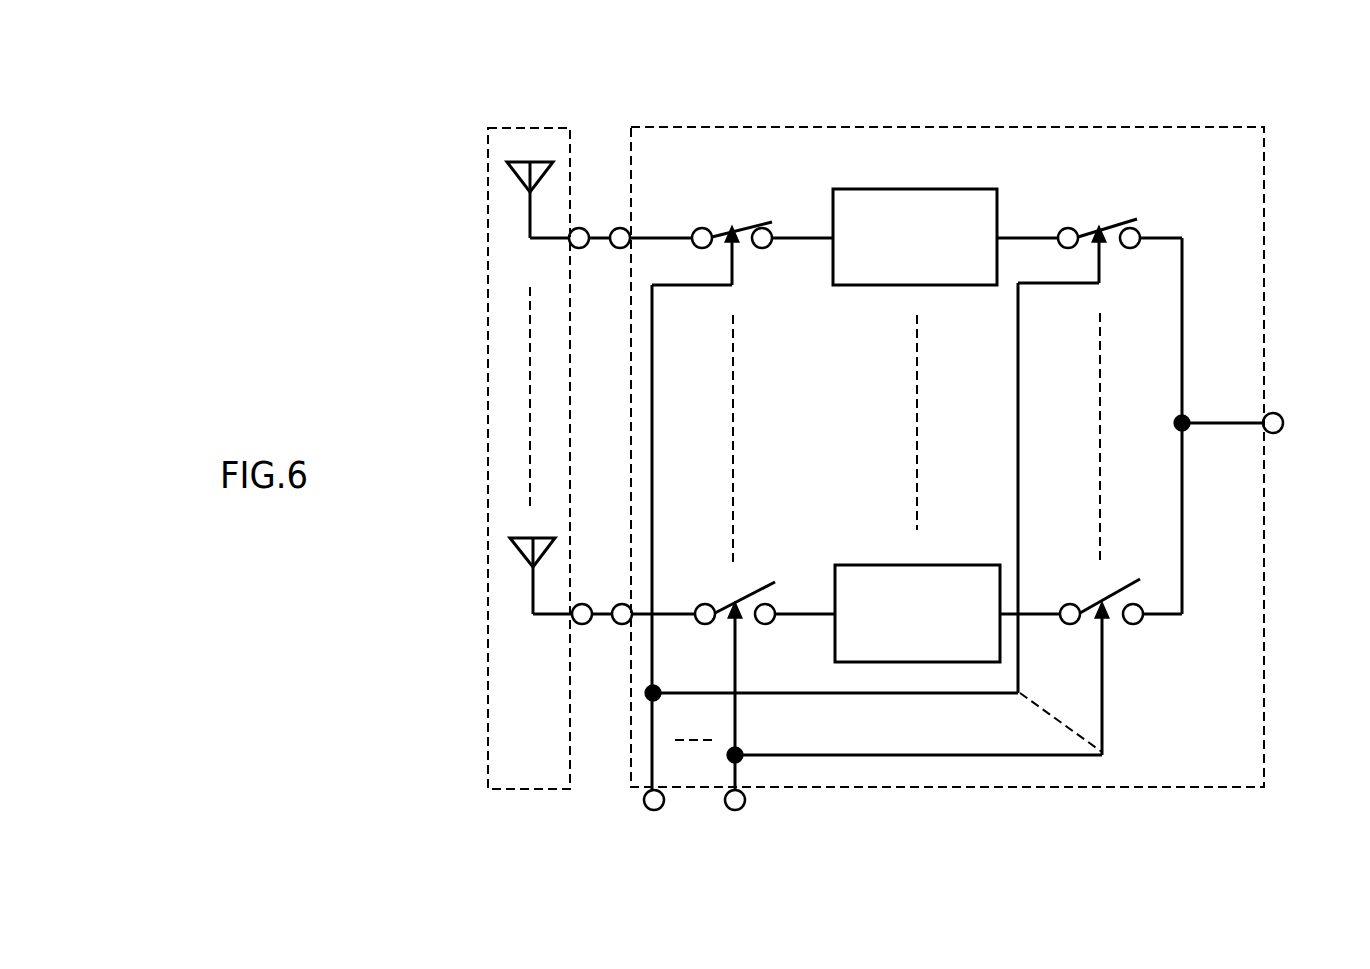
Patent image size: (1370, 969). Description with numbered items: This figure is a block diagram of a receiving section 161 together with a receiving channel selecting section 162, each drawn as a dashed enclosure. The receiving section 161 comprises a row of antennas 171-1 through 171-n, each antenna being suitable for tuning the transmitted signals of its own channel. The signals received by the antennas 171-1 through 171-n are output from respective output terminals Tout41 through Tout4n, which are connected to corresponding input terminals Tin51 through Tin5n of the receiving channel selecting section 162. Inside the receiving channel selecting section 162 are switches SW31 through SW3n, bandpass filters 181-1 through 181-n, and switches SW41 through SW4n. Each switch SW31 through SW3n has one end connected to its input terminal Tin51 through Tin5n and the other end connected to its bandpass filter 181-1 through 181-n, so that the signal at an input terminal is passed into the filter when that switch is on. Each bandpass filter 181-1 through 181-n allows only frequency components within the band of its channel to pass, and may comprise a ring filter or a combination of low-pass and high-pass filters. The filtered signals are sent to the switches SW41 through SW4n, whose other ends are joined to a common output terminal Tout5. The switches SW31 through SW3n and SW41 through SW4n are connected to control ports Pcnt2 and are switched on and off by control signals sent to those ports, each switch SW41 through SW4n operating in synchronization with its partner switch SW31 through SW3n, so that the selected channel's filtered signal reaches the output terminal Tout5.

The receiving section 161 is at (572, 128).
The receiving channel selecting section 162 is at (830, 127).
The antenna 171-1 is at (527, 158).
The antenna 171-n is at (518, 556).
The bandpass filter 181-1 is at (897, 189).
The bandpass filter 181-n is at (897, 565).
The output terminal Tout41 is at (577, 230).
The output terminal Tout4n is at (583, 625).
The input terminal Tin51 is at (618, 228).
The input terminal Tin5n is at (621, 625).
The switch SW31 is at (730, 226).
The switch SW3n is at (733, 603).
The switch SW41 is at (1097, 226).
The switch SW4n is at (1100, 603).
The output terminal Tout5 is at (1280, 427).
The control ports Pcnt2 is at (735, 818).